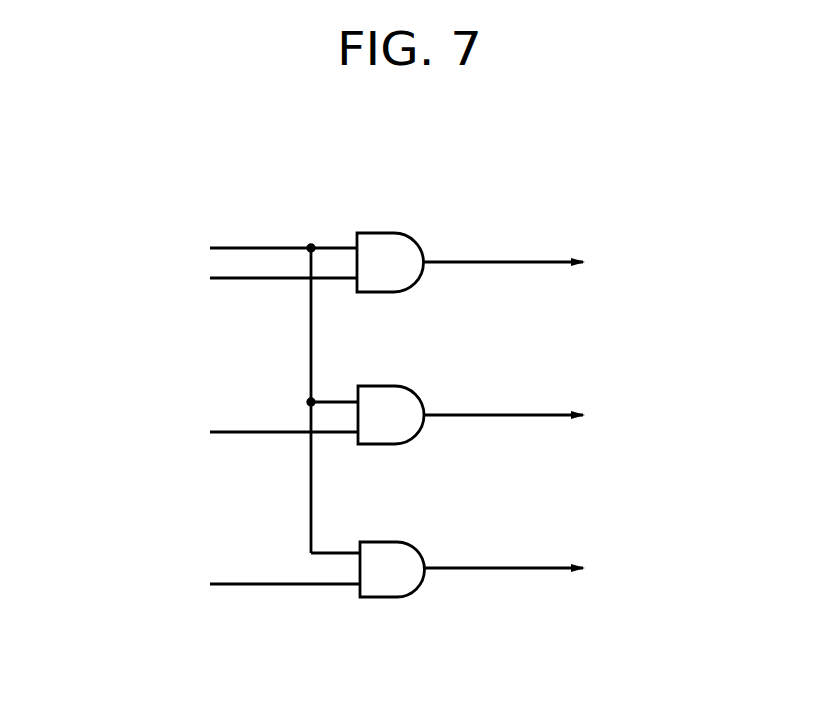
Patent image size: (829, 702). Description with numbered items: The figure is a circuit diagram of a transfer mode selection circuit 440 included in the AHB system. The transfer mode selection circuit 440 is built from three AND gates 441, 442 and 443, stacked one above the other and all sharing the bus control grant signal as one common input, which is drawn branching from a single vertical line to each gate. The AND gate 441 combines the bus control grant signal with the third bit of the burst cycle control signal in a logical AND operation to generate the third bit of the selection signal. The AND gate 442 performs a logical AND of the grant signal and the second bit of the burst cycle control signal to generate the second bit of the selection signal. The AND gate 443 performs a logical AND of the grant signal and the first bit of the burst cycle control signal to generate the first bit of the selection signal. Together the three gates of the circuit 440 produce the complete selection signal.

The transfer mode selection circuit 440 is at (358, 178).
The AND gate 441 is at (413, 285).
The AND gate 442 is at (414, 437).
The AND gate 443 is at (416, 590).